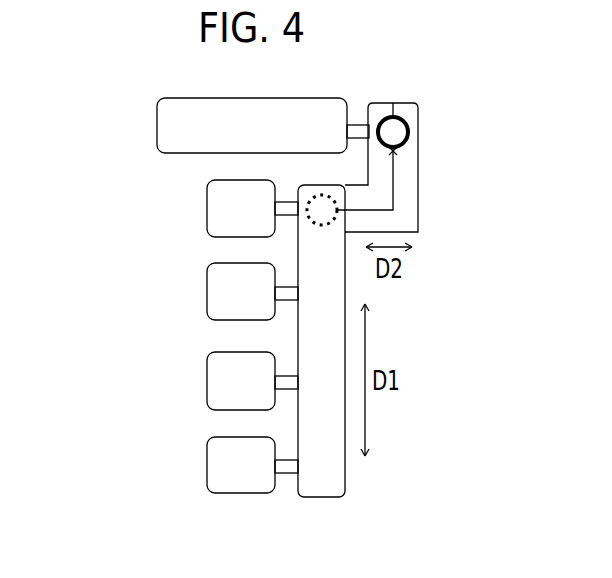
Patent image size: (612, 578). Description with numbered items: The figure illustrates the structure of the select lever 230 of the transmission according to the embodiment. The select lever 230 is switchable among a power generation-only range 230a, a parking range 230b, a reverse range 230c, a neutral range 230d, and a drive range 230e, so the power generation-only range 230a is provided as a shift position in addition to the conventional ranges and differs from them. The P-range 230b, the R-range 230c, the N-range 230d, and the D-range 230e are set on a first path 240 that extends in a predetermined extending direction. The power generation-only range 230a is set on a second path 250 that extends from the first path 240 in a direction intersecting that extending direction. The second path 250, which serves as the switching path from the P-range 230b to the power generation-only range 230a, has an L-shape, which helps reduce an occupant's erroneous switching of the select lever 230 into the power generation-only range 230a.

The select lever 230 is at (393, 103).
The power generation-only range 230a is at (157, 127).
The parking range 230b is at (207, 211).
The reverse range 230c is at (207, 294).
The neutral range 230d is at (207, 386).
The drive range 230e is at (207, 469).
The first path 240 is at (315, 497).
The second path 250 is at (418, 222).